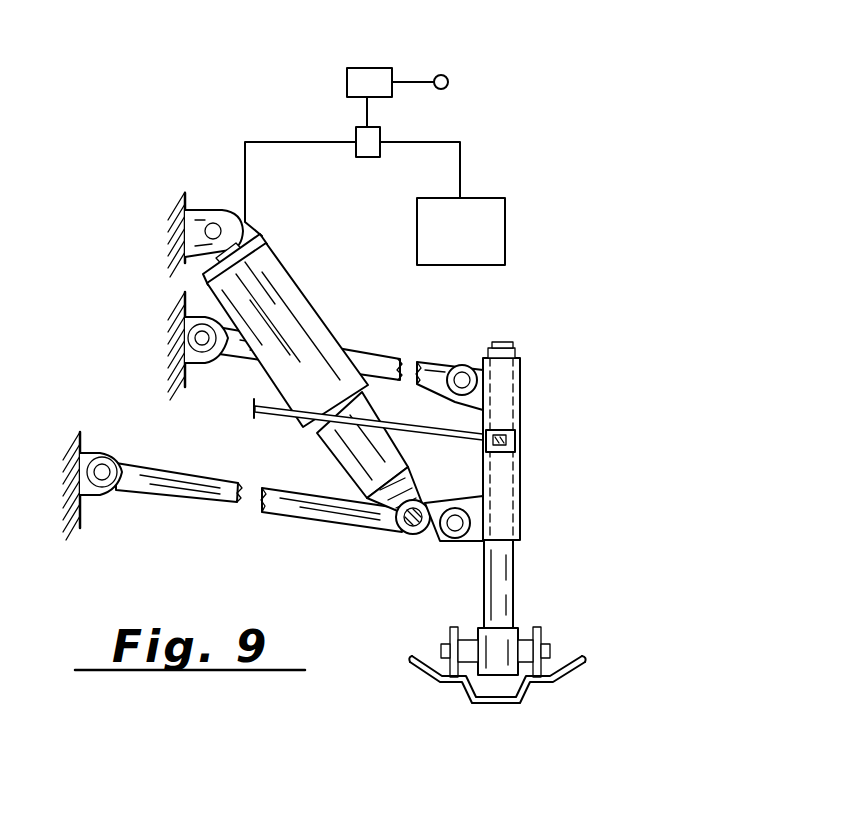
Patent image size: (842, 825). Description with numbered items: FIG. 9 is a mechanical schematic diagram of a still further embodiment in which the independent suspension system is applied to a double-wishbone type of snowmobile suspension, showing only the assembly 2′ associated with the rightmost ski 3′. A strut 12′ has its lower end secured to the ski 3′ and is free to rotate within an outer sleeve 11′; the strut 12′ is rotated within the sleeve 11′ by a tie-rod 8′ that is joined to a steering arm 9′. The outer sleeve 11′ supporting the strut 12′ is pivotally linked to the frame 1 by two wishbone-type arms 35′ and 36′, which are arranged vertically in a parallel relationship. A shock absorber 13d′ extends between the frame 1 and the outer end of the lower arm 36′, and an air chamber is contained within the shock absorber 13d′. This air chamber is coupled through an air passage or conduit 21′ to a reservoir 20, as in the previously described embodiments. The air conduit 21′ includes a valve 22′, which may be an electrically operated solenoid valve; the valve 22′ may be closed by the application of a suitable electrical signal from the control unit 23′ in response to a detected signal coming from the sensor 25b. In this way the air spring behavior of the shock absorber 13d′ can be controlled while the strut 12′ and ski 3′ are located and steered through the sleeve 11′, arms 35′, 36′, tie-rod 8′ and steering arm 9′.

The frame 1 is at (178, 208).
The suspension assembly 2′ is at (561, 441).
The ski 3′ is at (497, 703).
The tie-rod 8′ is at (280, 416).
The steering arm 9′ is at (503, 430).
The sleeve 11′ is at (512, 513).
The strut 12′ is at (514, 586).
The shock absorber 13d′ is at (312, 298).
The reservoir 20 is at (505, 222).
The air conduit 21′ is at (270, 140).
The valve 22′ is at (365, 157).
The control unit 23′ is at (367, 68).
The sensor 25b is at (444, 76).
The wishbone-type arm 35′ is at (455, 364).
The wishbone-type arm 36′ is at (298, 523).